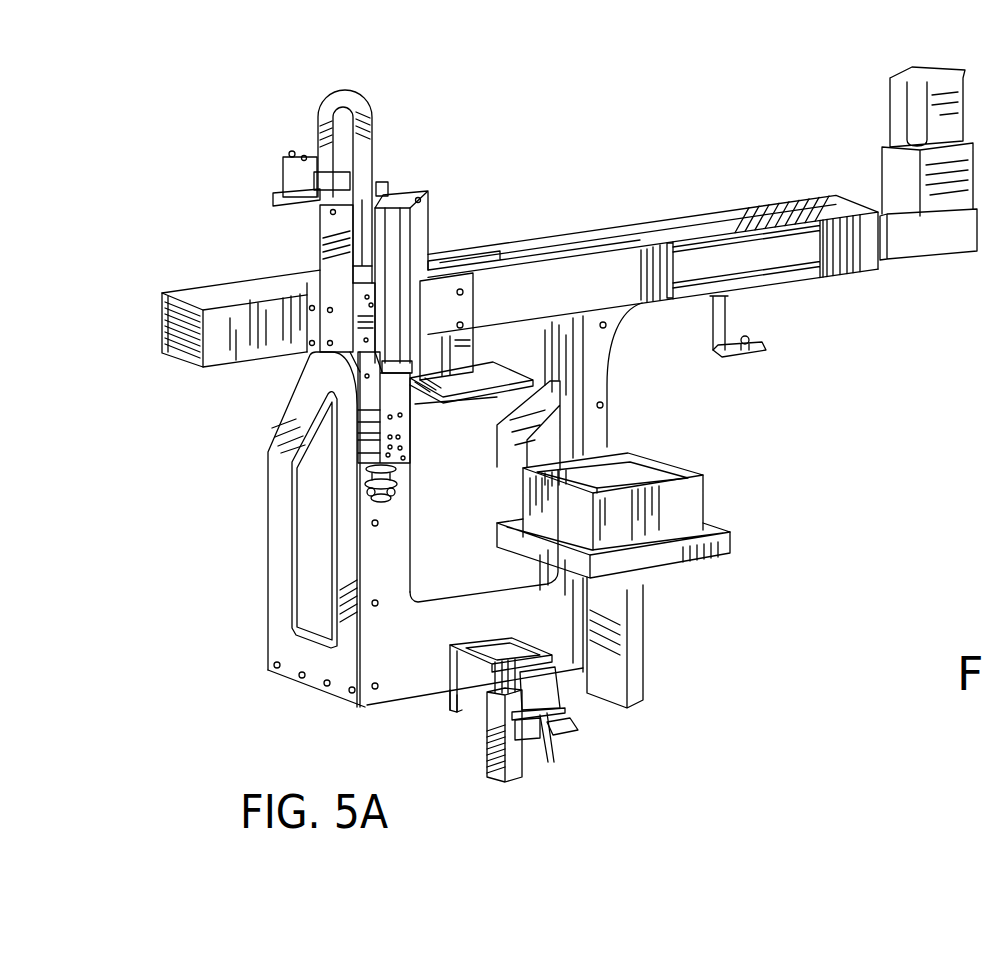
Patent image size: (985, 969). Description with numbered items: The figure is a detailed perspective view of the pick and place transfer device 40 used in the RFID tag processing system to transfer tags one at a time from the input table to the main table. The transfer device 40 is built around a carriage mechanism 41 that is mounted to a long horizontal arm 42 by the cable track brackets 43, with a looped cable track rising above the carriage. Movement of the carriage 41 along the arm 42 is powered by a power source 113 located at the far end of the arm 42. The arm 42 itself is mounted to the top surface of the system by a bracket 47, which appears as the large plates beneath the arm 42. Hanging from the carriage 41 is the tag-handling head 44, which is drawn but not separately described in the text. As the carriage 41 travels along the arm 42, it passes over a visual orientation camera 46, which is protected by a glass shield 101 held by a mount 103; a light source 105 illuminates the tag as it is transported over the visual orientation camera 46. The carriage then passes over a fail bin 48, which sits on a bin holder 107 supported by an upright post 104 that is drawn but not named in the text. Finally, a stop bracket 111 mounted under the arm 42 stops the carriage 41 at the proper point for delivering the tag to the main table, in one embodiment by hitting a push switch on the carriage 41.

The transfer device 40 is at (276, 108).
The carriage mechanism 41 is at (403, 424).
The arm 42 is at (186, 302).
The cable track brackets 43 is at (314, 250).
The gripper 44 is at (400, 497).
The visual orientation camera 46 is at (533, 760).
The bracket 47 is at (276, 491).
The fail bin 48 is at (682, 503).
The glass shield 101 is at (476, 658).
The mount 103 is at (483, 687).
The support post 104 is at (633, 615).
The light source 105 is at (490, 755).
The bin holder 107 is at (717, 550).
The stop bracket 111 is at (733, 317).
The power source 113 is at (900, 92).